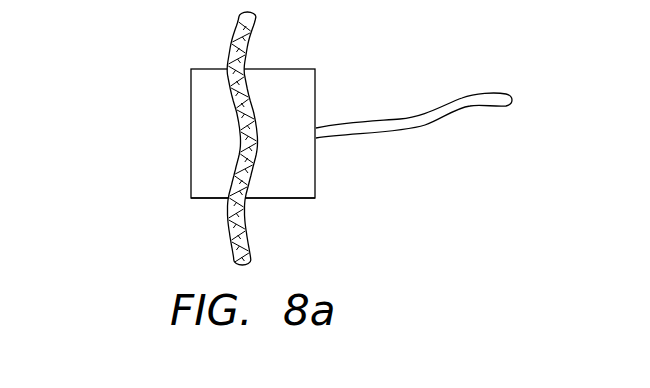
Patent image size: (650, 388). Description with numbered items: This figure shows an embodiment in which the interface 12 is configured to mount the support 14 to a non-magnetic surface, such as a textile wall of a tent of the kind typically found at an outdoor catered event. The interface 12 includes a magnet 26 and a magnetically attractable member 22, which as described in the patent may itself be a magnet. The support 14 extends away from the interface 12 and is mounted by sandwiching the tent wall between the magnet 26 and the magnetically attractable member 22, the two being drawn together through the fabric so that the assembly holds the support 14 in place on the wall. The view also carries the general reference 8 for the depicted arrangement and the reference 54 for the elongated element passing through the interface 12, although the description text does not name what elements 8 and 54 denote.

The fastening assembly 8 is at (358, 78).
The interface 12 is at (170, 90).
The support 14 is at (418, 132).
The magnetically attractable member 22 is at (190, 197).
The magnet 26 is at (293, 69).
The twisted strand / cord 54 is at (249, 247).